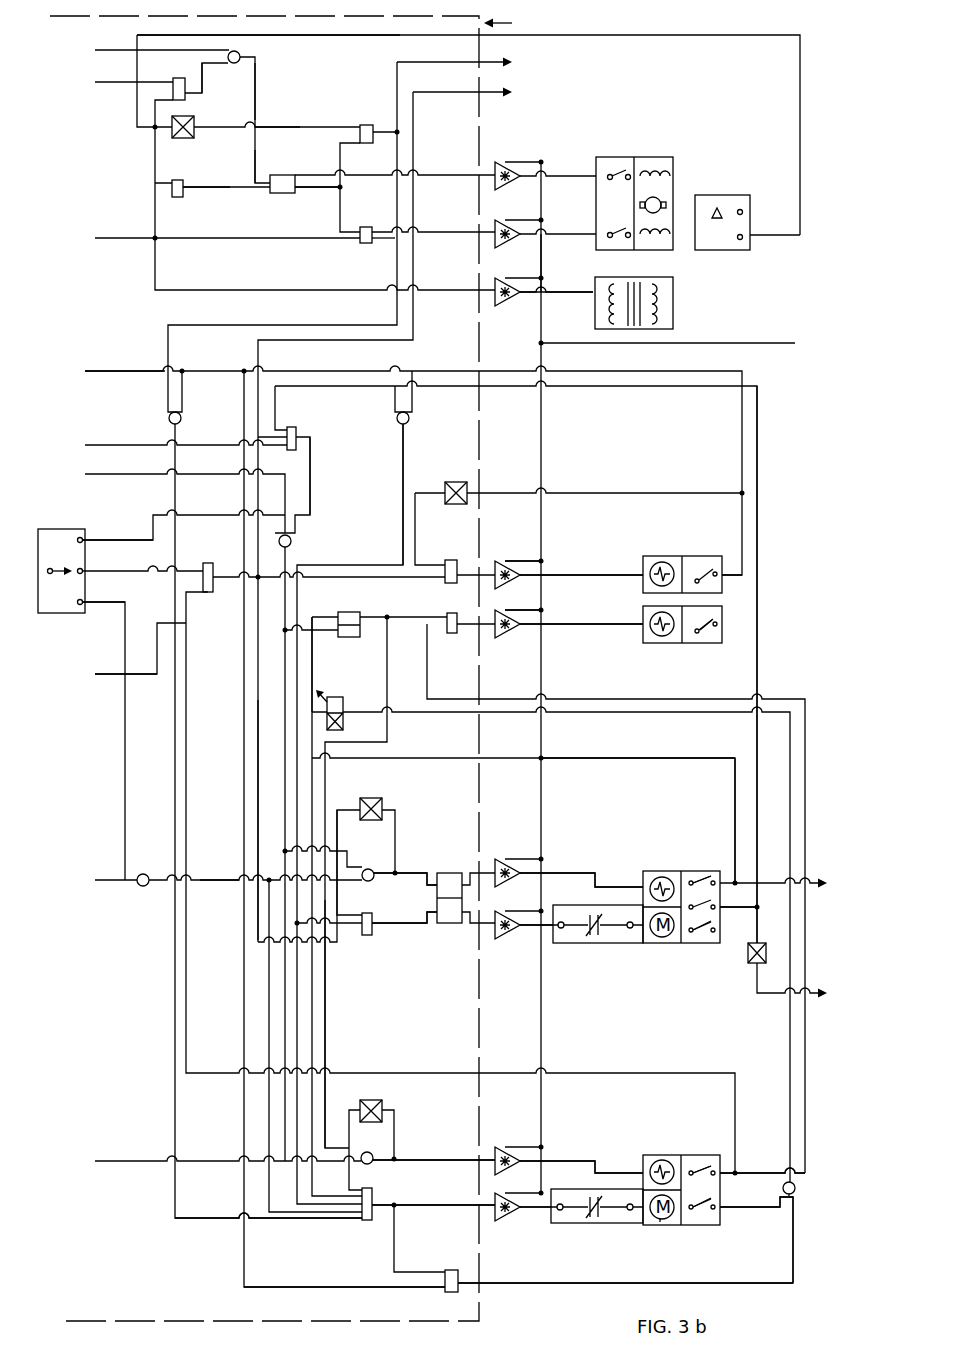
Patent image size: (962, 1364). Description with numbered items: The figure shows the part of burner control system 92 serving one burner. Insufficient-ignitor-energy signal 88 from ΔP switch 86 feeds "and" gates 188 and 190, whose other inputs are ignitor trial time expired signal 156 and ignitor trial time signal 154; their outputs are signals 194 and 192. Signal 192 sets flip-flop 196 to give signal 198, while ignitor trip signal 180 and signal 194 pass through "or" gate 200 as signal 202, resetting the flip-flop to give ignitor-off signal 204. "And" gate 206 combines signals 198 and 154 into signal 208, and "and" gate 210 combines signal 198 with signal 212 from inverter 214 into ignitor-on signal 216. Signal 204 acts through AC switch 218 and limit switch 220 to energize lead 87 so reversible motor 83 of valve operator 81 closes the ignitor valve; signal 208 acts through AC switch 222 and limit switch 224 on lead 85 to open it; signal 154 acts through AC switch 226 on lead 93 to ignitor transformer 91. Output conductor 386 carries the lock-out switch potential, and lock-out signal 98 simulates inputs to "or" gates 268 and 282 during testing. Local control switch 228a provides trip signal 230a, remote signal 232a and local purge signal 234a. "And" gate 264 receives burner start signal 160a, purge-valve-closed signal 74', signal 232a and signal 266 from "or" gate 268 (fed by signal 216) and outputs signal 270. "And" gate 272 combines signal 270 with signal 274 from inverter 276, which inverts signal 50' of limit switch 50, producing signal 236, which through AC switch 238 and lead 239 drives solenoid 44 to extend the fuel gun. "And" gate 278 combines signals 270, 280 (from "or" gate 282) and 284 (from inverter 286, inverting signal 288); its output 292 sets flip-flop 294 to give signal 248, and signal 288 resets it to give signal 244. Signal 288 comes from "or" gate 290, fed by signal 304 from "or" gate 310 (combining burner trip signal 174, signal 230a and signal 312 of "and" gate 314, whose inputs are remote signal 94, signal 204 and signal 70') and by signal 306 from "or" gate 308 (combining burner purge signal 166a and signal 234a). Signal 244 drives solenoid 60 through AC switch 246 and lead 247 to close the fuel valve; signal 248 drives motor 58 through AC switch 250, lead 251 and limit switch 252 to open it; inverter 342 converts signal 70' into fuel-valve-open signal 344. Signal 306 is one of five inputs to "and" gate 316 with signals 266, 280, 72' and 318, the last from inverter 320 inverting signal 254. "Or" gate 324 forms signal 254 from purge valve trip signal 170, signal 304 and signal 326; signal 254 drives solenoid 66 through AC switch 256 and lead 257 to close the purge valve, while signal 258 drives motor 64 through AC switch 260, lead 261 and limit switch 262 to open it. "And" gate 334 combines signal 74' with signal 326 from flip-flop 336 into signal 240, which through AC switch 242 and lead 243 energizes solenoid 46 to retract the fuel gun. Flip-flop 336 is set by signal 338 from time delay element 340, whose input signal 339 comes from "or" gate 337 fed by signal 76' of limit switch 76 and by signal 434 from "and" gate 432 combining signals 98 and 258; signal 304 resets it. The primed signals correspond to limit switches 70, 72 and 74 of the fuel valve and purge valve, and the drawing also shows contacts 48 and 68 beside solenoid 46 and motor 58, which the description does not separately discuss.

The burner control system 92 is at (514, 23).
The ignitor trip signal 180 is at (84, 49).
The ignitor trial time expired signal 156 is at (84, 81).
The "and" gate 188 is at (186, 81).
The "or" gate 200 is at (246, 53).
The signal 194 is at (205, 78).
The signal 202 is at (275, 82).
The inverter 214 is at (195, 116).
The signal 212 is at (275, 124).
The "and" gate 210 is at (374, 122).
The flip-flop 196 is at (258, 152).
The signal 204 is at (320, 165).
The "and" gate 190 is at (175, 178).
The signal 192 is at (225, 192).
The signal 198 is at (328, 192).
The "and" gate 206 is at (385, 212).
The signal 208 is at (382, 242).
The ignitor trial time signal 154 is at (84, 237).
The signal 88 is at (382, 38).
The signal 216 is at (406, 62).
The AC switch 218 is at (482, 163).
The AC switch 222 is at (480, 221).
The AC switch 226 is at (482, 279).
The limit switch 220 is at (602, 156).
The lead 87 is at (624, 170).
The valve operator 81 is at (668, 142).
The reversible motor 83 is at (662, 198).
The ΔP switch 86 is at (730, 196).
The lead 85 is at (550, 230).
The limit switch 224 is at (612, 250).
The conductive lead 93 is at (550, 288).
The ignitor transformer 91 is at (673, 308).
The output conductor 386 is at (734, 346).
The lock-out signal 98 is at (78, 370).
The "or" gate 268 is at (164, 414).
The "or" gate 282 is at (380, 417).
The "and" gate 314 is at (302, 435).
The remote signal 94 is at (78, 444).
The burner trip signal 174 is at (84, 473).
The local control switch 228a is at (66, 530).
The signal 230a is at (146, 540).
The signal 232a is at (148, 572).
The signal 234a is at (142, 604).
The "and" gate 264 is at (228, 535).
The signal 312 is at (316, 512).
The "or" gate 310 is at (294, 542).
The signal 280 is at (402, 480).
The signal 274 is at (418, 478).
The inverter 276 is at (474, 484).
The "and" gate 272 is at (452, 556).
The output signal 236 is at (487, 526).
The AC switch 238 is at (491, 560).
The lead 239 is at (570, 572).
The solenoid 44 is at (660, 548).
The limit switch 50 is at (717, 534).
The signal 50' is at (780, 664).
The lead 243 is at (570, 624).
The AC switch 242 is at (524, 634).
The solenoid 46 is at (662, 644).
The relay contact 48 is at (706, 644).
The output signal 240 is at (512, 636).
The flip-flop 336 is at (352, 600).
The signal 326 is at (388, 616).
The "and" gate 334 is at (452, 636).
The signal 338 is at (318, 648).
The time delay element 340 is at (334, 694).
The signal 304 is at (266, 642).
The burner start signal 160a is at (94, 673).
The signal 270 is at (256, 744).
The signal 339 is at (632, 718).
The signal 284 is at (348, 798).
The inverter 286 is at (387, 804).
The signal 288 is at (386, 838).
The output signal 244 is at (471, 844).
The flip-flop 294 is at (453, 869).
The AC switch 246 is at (486, 857).
The lead 247 is at (547, 860).
The solenoid 60 is at (658, 864).
The signal 72' is at (715, 822).
The relay contact 72 is at (755, 852).
The relay contact 70 is at (706, 862).
The burner purge signal 166a is at (94, 879).
The "or" gate 308 is at (146, 890).
The signal 306 is at (238, 884).
The "or" gate 290 is at (366, 878).
The "and" gate 278 is at (372, 938).
The signal 292 is at (390, 930).
The output signal 248 is at (468, 936).
The AC switch 250 is at (508, 940).
The lead 251 is at (537, 931).
The motor 58 is at (660, 940).
The relay contact 68 is at (712, 940).
The limit switch 252 is at (614, 948).
The inverter 342 is at (742, 964).
The signal 70' is at (781, 919).
The signal 344 is at (760, 996).
The signal 318 is at (351, 1110).
The inverter 320 is at (384, 1109).
The purge valve trip signal 170 is at (84, 1160).
The "or" gate 324 is at (366, 1166).
The output signal 254 is at (466, 1162).
The AC switch 256 is at (486, 1150).
The lead 257 is at (560, 1146).
The solenoid 66 is at (672, 1146).
The relay contact 74 is at (709, 1150).
The signal 74' is at (762, 1154).
The "or" gate 337 is at (796, 1192).
The output signal 258 is at (466, 1206).
The signal 266 is at (208, 1220).
The "and" gate 316 is at (364, 1222).
The AC switch 260 is at (510, 1226).
The lead 261 is at (530, 1214).
The limit switch 262 is at (596, 1224).
The motor 64 is at (661, 1226).
The limit switch 76 is at (719, 1225).
The signal 76' is at (756, 1240).
The "and" gate 432 is at (438, 1294).
The signal 434 is at (566, 1283).